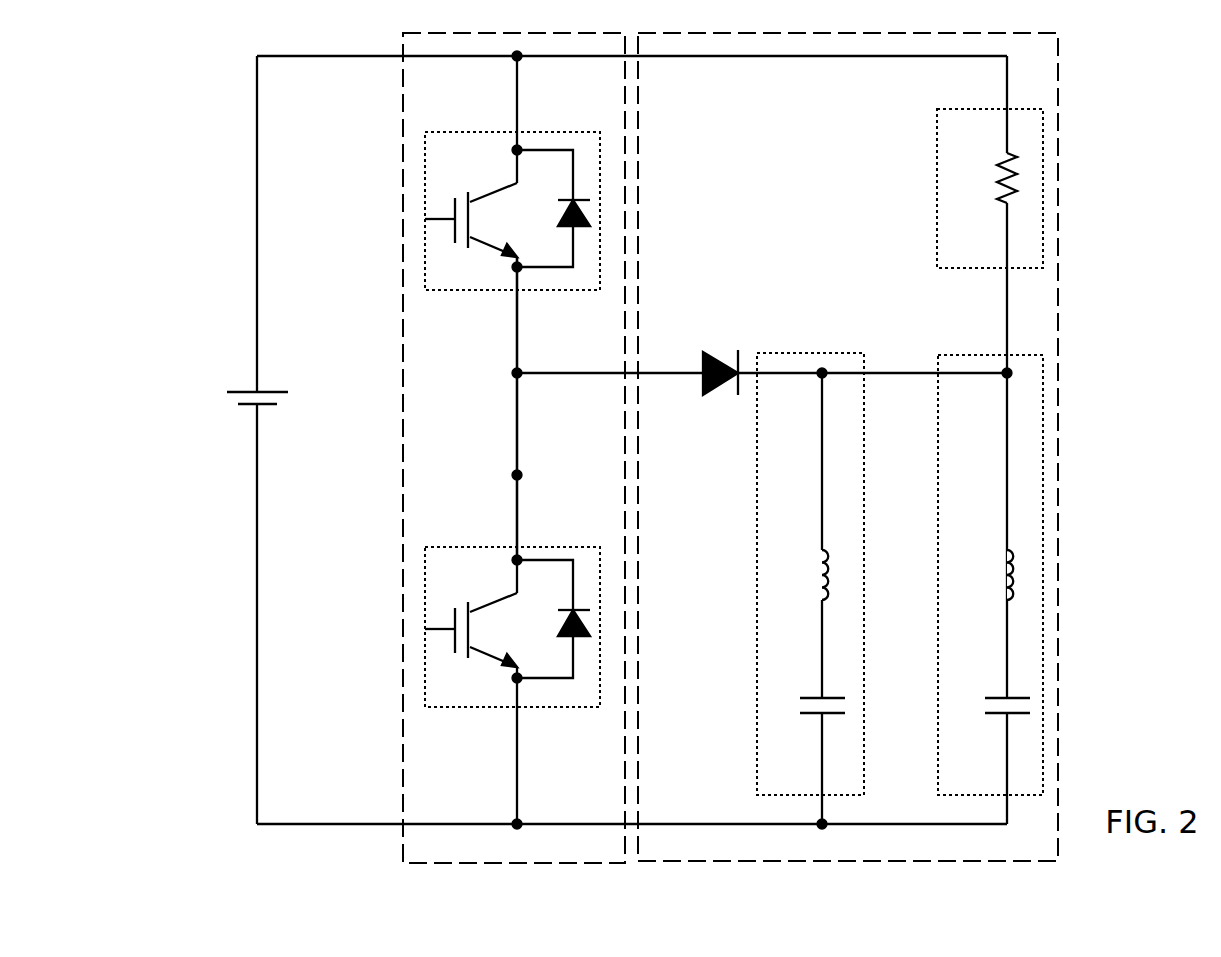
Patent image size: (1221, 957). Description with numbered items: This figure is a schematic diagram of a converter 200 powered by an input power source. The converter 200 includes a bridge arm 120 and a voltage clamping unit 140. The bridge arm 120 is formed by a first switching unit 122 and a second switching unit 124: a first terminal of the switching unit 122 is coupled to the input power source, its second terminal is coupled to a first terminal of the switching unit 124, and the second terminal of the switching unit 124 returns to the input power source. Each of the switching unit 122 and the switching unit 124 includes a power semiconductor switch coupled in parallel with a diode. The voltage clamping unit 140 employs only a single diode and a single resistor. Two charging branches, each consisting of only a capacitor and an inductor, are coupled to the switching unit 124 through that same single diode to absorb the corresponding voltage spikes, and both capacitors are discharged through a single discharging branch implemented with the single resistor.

The converter 200 is at (1197, 162).
The bridge arm 120 is at (403, 262).
The switching unit 122 is at (425, 187).
The switching unit 124 is at (425, 580).
The voltage clamping unit 140 is at (1058, 330).